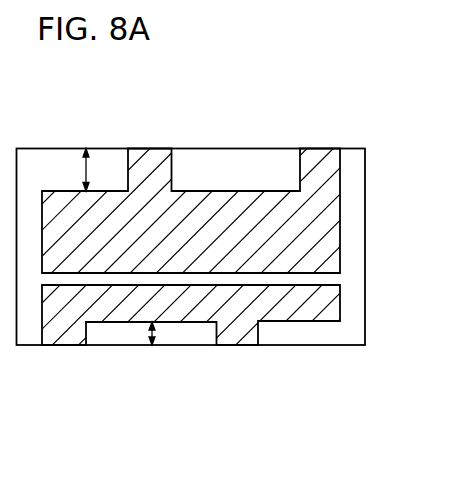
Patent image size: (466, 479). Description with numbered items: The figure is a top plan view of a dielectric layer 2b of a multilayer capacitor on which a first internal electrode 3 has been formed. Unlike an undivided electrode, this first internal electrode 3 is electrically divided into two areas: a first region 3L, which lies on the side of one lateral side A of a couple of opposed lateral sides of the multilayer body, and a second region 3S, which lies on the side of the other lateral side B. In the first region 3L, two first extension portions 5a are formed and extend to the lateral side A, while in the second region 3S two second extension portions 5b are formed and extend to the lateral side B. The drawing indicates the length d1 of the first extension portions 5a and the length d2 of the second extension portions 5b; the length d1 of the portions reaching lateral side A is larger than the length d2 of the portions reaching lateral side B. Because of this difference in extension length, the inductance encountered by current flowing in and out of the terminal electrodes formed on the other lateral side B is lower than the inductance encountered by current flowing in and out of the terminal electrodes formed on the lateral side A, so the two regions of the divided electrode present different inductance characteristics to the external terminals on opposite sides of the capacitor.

The dielectric layer 2b is at (365, 243).
The first internal electrode 3 is at (204, 257).
The first region 3L is at (201, 238).
The second region 3S is at (188, 356).
The first extension portions 5a is at (155, 157).
The second extension portions 5b is at (69, 328).
The lateral side A is at (246, 148).
The lateral side B is at (235, 344).
The length of first extension portions d1 is at (85, 171).
The length of second extension portions d2 is at (152, 336).